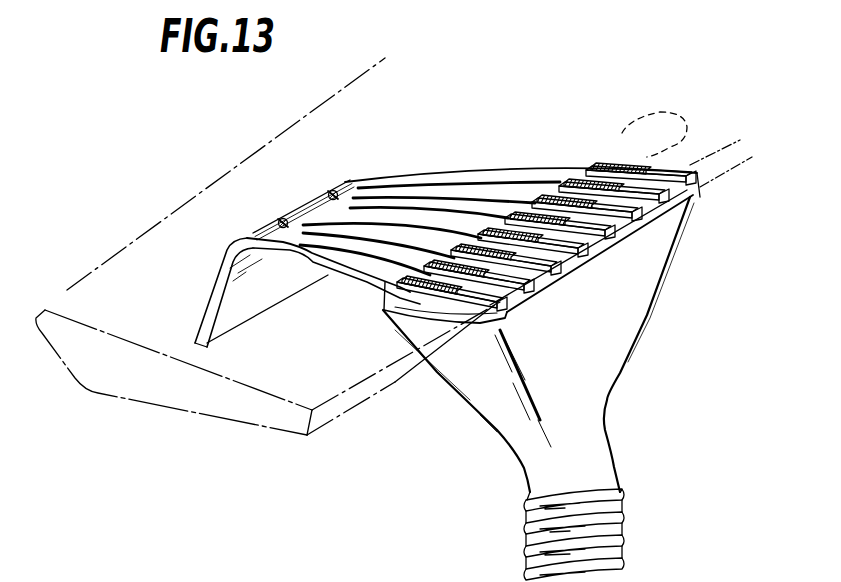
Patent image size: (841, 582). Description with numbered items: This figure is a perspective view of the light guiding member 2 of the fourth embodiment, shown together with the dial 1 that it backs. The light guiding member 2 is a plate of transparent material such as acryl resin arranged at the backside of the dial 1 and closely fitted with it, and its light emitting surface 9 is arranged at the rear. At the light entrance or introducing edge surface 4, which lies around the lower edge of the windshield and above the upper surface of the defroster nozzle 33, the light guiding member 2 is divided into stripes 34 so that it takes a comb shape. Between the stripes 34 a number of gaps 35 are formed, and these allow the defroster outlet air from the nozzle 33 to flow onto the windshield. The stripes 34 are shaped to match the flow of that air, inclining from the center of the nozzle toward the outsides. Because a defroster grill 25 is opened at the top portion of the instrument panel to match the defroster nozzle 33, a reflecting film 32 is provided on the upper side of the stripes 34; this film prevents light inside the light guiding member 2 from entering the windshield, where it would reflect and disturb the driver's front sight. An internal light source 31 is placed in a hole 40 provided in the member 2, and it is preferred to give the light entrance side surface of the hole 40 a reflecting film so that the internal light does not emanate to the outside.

The dial 1 is at (126, 372).
The light guiding member 2 is at (458, 156).
The light entrance edge surface 4 is at (702, 213).
The light emitting surface 9 is at (200, 315).
The defroster grill 25 is at (658, 112).
The internal light source 31 is at (331, 191).
The reflecting film 32 is at (573, 188).
The defroster nozzle 33 is at (596, 254).
The stripes 34 is at (482, 213).
The gaps 35 is at (655, 188).
The hole 40 is at (340, 187).